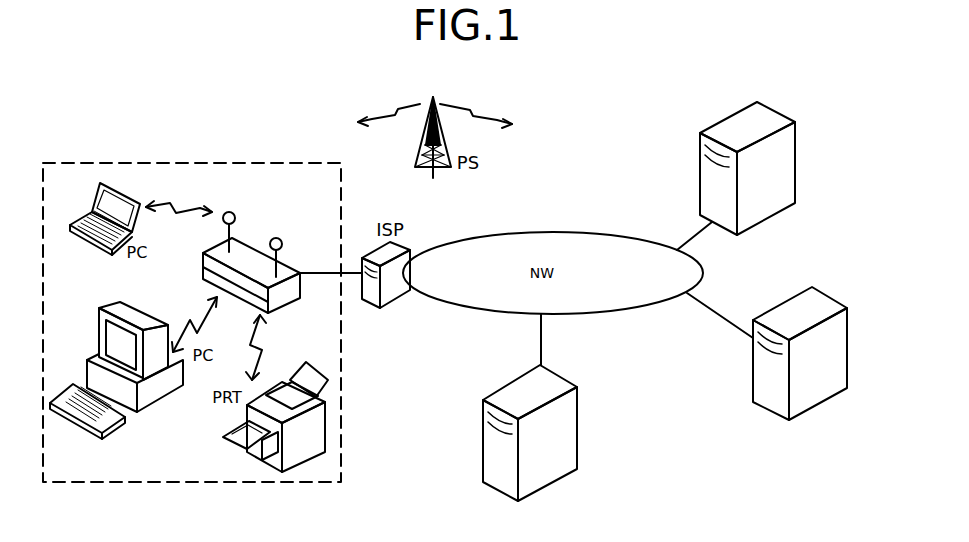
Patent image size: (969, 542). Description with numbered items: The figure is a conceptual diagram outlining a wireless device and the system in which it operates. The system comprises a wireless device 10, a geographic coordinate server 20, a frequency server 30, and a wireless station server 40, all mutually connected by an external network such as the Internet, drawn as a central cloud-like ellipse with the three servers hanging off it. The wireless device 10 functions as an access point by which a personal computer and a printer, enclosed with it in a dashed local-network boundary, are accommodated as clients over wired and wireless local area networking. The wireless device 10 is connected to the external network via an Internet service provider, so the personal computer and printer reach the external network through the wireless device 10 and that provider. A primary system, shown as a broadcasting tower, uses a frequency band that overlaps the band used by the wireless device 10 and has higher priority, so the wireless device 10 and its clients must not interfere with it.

The wireless device 10 is at (247, 252).
The geographic coordinate server 20 is at (567, 437).
The frequency server 30 is at (817, 310).
The wireless station server 40 is at (782, 157).